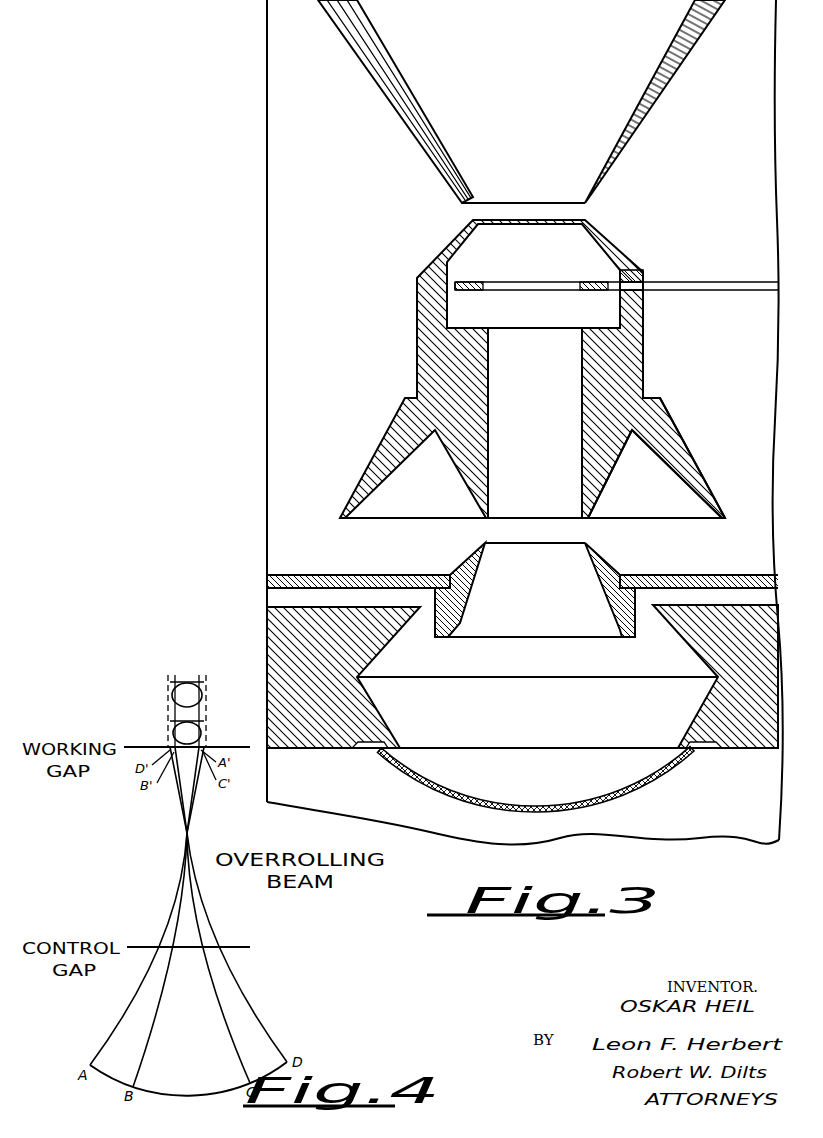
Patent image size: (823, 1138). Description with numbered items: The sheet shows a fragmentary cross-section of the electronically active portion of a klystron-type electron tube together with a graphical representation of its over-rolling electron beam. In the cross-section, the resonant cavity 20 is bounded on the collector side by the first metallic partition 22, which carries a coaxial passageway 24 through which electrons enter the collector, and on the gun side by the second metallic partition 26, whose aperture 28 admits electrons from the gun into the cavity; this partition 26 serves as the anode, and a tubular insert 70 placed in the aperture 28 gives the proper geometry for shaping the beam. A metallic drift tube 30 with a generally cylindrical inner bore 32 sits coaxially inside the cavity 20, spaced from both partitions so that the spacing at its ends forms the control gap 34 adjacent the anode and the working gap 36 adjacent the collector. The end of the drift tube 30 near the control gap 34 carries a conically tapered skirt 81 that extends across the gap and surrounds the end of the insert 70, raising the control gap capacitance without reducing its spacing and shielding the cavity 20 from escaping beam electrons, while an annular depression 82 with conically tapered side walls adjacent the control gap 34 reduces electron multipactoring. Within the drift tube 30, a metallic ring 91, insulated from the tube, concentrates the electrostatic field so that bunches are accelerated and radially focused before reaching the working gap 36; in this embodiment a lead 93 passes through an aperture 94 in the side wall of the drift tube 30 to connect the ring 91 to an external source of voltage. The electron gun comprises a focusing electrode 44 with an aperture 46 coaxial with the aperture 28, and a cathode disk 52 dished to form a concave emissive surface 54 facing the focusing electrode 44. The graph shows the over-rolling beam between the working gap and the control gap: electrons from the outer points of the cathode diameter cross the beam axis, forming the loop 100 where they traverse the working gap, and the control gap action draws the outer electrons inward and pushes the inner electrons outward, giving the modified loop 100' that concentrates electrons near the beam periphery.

In FIG. 3, the resonant cavity 20 is at (712, 201).
In FIG. 3, the first metallic partition 22 is at (658, 89).
In FIG. 3, the passageway 24 is at (548, 103).
In FIG. 3, the second metallic partition 26 is at (690, 578).
In FIG. 3, the aperture 28 is at (545, 600).
In FIG. 3, the drift tube 30 is at (640, 362).
In FIG. 3, the inner bore 32 is at (540, 423).
In FIG. 3, the control gap 34 is at (550, 538).
In FIG. 3, the working gap 36 is at (523, 212).
In FIG. 3, the focusing electrode 44 is at (695, 648).
In FIG. 3, the aperture 46 is at (540, 670).
In FIG. 3, the cathode disk 52 is at (648, 784).
In FIG. 3, the concave surface 54 is at (545, 785).
In FIG. 3, the tubular insert 70 is at (597, 562).
In FIG. 3, the conically tapered skirt 81 is at (703, 477).
In FIG. 3, the annular depression 82 is at (645, 505).
In FIG. 3, the metallic ring 91 is at (600, 292).
In FIG. 3, the lead 93 is at (721, 284).
In FIG. 3, the aperture 94 is at (641, 279).
In FIG. 4, the loop 100 is at (209, 733).
In FIG. 4, the loop illustration 100' is at (210, 695).